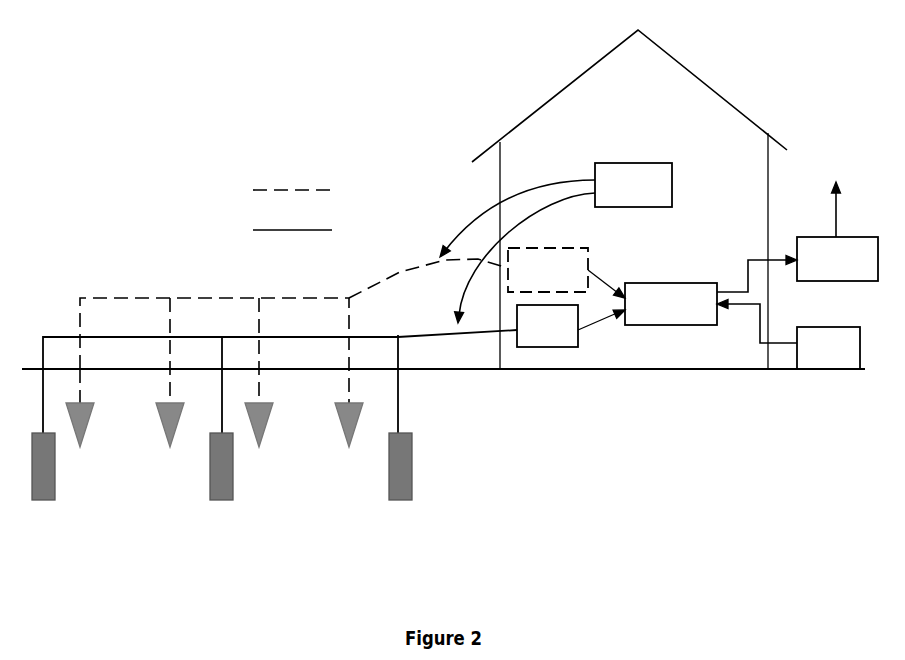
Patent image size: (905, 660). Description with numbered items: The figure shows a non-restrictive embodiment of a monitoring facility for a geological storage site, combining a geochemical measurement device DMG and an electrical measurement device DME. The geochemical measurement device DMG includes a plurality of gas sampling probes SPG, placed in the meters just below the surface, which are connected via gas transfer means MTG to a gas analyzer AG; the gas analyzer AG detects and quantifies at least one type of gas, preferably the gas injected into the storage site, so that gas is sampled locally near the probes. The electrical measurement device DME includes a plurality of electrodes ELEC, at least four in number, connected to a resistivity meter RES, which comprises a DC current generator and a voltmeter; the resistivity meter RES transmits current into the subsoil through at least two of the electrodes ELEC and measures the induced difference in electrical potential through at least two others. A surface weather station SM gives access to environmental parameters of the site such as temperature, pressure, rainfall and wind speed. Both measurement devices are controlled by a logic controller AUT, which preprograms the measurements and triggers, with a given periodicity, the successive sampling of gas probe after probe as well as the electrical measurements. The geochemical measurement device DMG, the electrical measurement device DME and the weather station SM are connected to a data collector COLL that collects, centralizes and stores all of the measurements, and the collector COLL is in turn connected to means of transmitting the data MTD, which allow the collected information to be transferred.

The electrical measurement device DME is at (243, 184).
The geochemical measurement device DMG is at (243, 224).
The logic controller AUT is at (556, 243).
The resistivity meter RES is at (566, 273).
The gas analyzer AG is at (571, 326).
The data collector COLL is at (711, 291).
The means of transmitting the data MTD is at (837, 231).
The surface weather station SM is at (788, 335).
The gas transfer means MTG is at (428, 345).
The gas sampling probes SPG is at (63, 481).
The electrodes ELEC is at (266, 452).